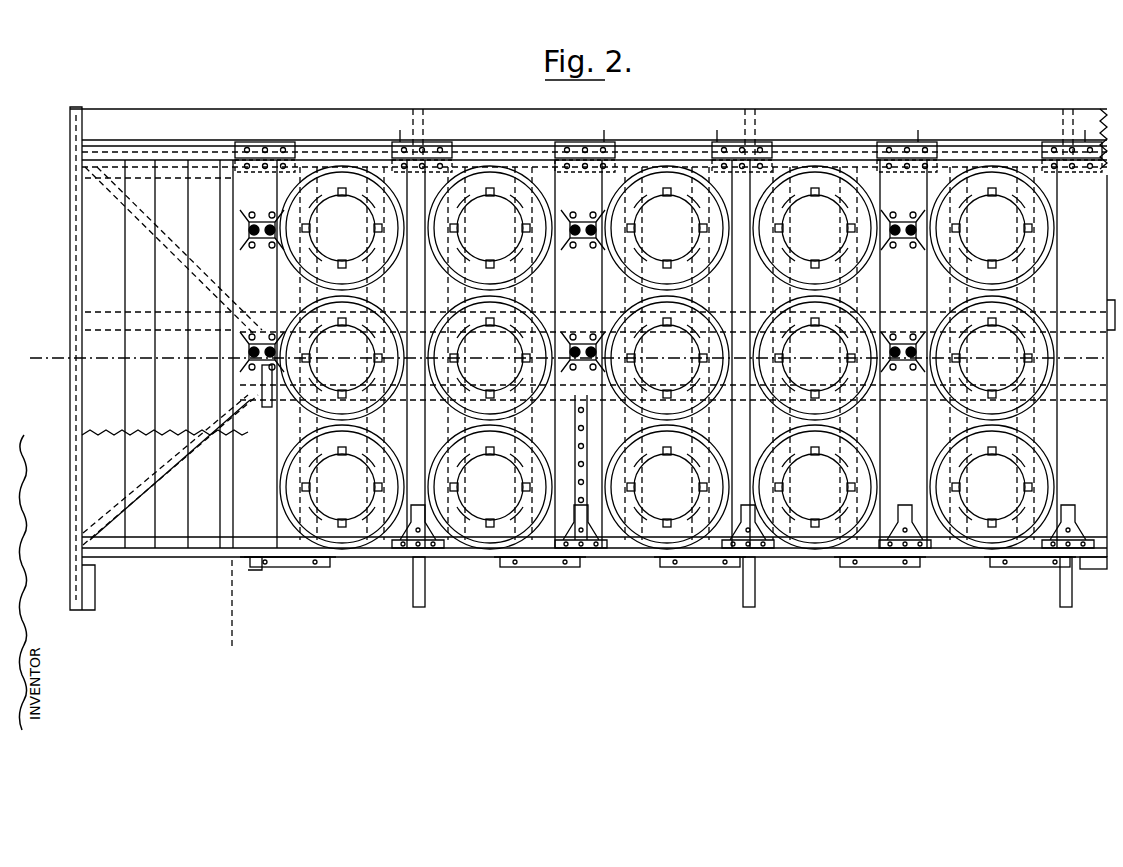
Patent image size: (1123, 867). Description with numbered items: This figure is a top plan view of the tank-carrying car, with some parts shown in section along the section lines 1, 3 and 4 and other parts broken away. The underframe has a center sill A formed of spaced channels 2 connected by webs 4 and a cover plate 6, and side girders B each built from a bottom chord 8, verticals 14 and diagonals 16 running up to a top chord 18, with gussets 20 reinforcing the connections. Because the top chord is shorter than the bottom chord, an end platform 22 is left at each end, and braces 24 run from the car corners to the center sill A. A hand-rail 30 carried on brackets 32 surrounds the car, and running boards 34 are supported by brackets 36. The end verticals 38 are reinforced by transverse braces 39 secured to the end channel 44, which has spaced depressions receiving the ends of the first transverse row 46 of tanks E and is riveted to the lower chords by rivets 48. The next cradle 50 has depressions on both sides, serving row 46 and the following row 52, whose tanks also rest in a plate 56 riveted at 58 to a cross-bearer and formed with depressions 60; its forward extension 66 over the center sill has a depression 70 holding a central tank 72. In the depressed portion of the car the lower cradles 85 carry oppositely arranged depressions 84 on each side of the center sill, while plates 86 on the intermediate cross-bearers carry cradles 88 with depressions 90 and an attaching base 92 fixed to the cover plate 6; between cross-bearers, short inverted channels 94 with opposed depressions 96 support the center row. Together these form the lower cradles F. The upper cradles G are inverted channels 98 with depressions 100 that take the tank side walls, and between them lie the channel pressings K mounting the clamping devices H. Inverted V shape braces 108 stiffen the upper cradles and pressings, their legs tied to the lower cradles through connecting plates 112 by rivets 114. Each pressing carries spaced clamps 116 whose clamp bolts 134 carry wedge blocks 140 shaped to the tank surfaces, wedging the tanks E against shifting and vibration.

The section line 1 is at (54, 350).
The spaced channels 2 is at (98, 330).
The section line 3 is at (860, 592).
The webs 4 is at (242, 644).
The cover plate 6 is at (1090, 360).
The bottom chord 8 is at (175, 548).
The verticals 14 is at (1082, 565).
The diagonals 16 is at (1100, 570).
The top chord 18 is at (818, 150).
The gussets 20 is at (1050, 145).
The end platform 22 is at (100, 235).
The braces 24 is at (135, 213).
The hand-rail 30 is at (983, 143).
The brackets 32 is at (738, 131).
The running boards 34 is at (325, 120).
The brackets 36 is at (423, 112).
The end verticals 38 is at (245, 570).
The transverse braces 39 is at (268, 407).
The end channel 44 is at (262, 525).
The first transverse row 46 is at (340, 545).
The rivets 48 is at (295, 555).
The cradle 50 is at (419, 437).
The row 52 is at (492, 548).
The plate 56 is at (545, 435).
The rivets 58 is at (585, 440).
The depressions 60 is at (520, 470).
The forward extension 66 is at (610, 380).
The depression 70 is at (630, 355).
The central tank 72 is at (685, 305).
The depressions 84 is at (1055, 505).
The lower cradles 85 is at (1100, 425).
The plates 86 is at (1040, 435).
The cradles 88 is at (1025, 367).
The depressions 90 is at (1062, 372).
The attaching base 92 is at (1108, 305).
The short inverted channel 94 is at (925, 362).
The opposed depressions 96 is at (910, 390).
The inverted channels 98 is at (1085, 285).
The depressions 100 is at (1062, 350).
The inverted V shape braces 108 is at (438, 472).
The connecting plates 112 is at (884, 523).
The rivets 114 is at (905, 537).
The clamps 116 is at (258, 355).
The clamp bolts 134 is at (583, 362).
The wedge blocks 140 is at (595, 352).
The center sill A is at (1114, 366).
The side girders B is at (640, 557).
The tanks E is at (667, 354).
The lower cradles F is at (544, 600).
The upper cradles G is at (758, 191).
The clamping devices H is at (940, 350).
The channel pressings K is at (905, 250).